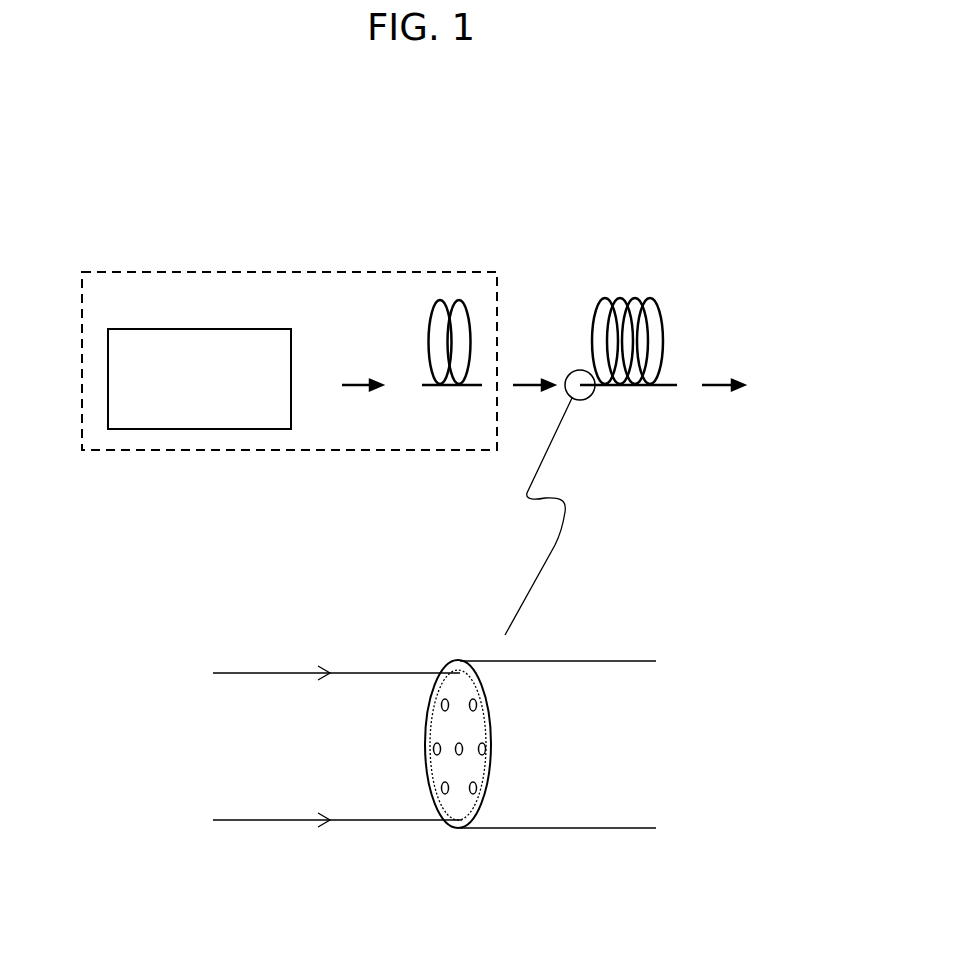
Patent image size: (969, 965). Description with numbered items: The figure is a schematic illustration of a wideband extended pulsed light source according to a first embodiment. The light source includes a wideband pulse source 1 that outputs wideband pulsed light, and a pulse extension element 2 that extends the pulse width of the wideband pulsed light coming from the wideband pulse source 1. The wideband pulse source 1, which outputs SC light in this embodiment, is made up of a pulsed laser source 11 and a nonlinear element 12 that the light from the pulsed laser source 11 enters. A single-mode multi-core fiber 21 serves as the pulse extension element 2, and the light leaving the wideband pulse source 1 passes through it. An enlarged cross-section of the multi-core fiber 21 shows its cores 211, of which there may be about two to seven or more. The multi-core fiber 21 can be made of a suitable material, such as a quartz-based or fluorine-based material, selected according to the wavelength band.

The wideband pulse source 1 is at (358, 270).
The pulsed laser source 11 is at (230, 329).
The nonlinear element 12 is at (462, 300).
The pulse extension element 2 is at (672, 220).
The multi-core fiber 21 is at (650, 303).
The cores 211 is at (445, 790).